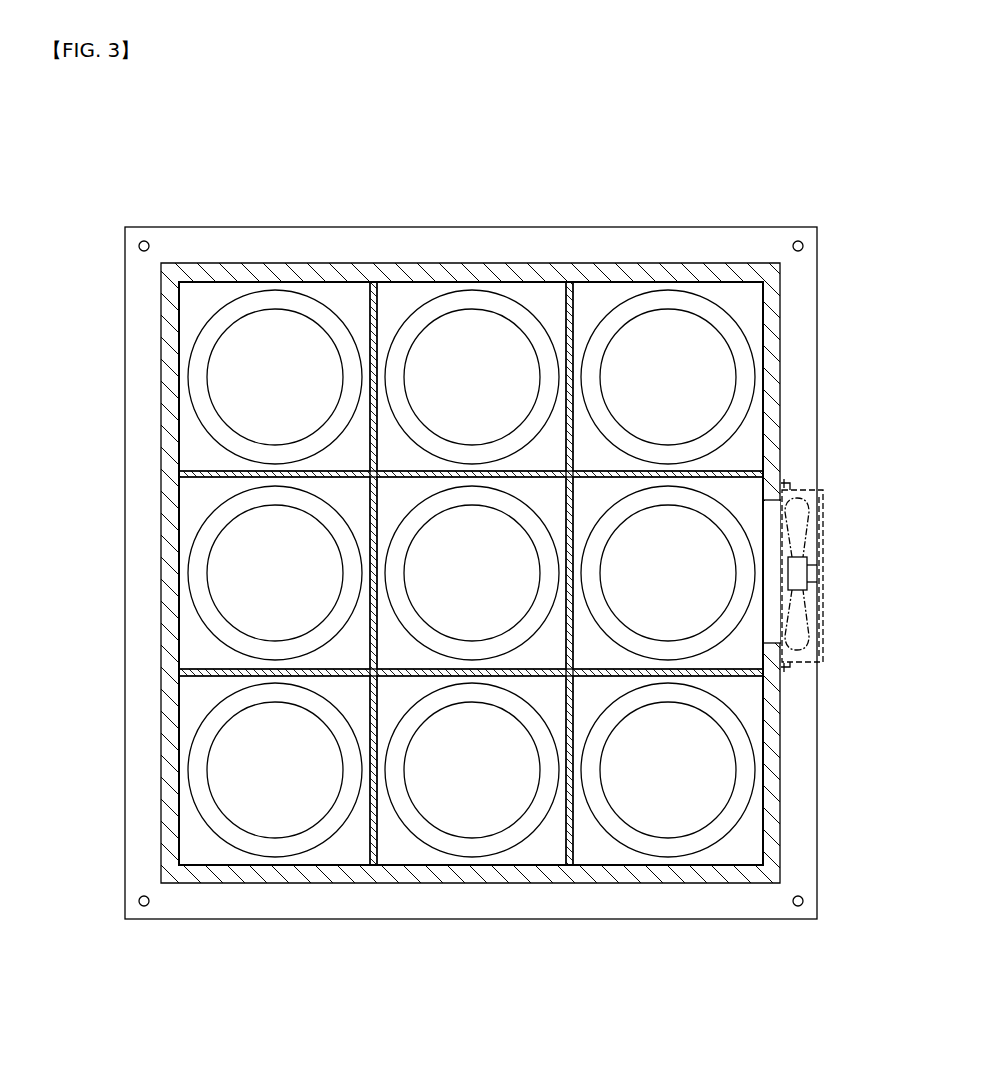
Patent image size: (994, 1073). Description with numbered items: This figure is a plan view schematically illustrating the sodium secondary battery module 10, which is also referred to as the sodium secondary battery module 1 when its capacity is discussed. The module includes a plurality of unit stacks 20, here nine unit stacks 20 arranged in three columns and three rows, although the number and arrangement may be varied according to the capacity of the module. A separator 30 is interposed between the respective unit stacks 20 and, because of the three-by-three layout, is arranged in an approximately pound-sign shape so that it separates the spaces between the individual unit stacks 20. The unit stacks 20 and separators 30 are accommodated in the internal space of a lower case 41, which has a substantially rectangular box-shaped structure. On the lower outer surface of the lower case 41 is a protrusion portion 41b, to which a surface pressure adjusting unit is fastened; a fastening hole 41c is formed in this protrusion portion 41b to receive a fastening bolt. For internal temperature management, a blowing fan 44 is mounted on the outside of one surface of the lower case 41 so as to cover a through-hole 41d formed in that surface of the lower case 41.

The sodium secondary battery module 10 is at (481, 129).
The sodium secondary battery module 1 is at (211, 370).
The unit stack 20 is at (184, 694).
The separator 30 is at (394, 307).
The lower case 41 is at (415, 880).
The protrusion portion 41b is at (573, 910).
The fastening hole 41c is at (799, 907).
The through-hole 41d is at (764, 611).
The blowing fan 44 is at (830, 485).